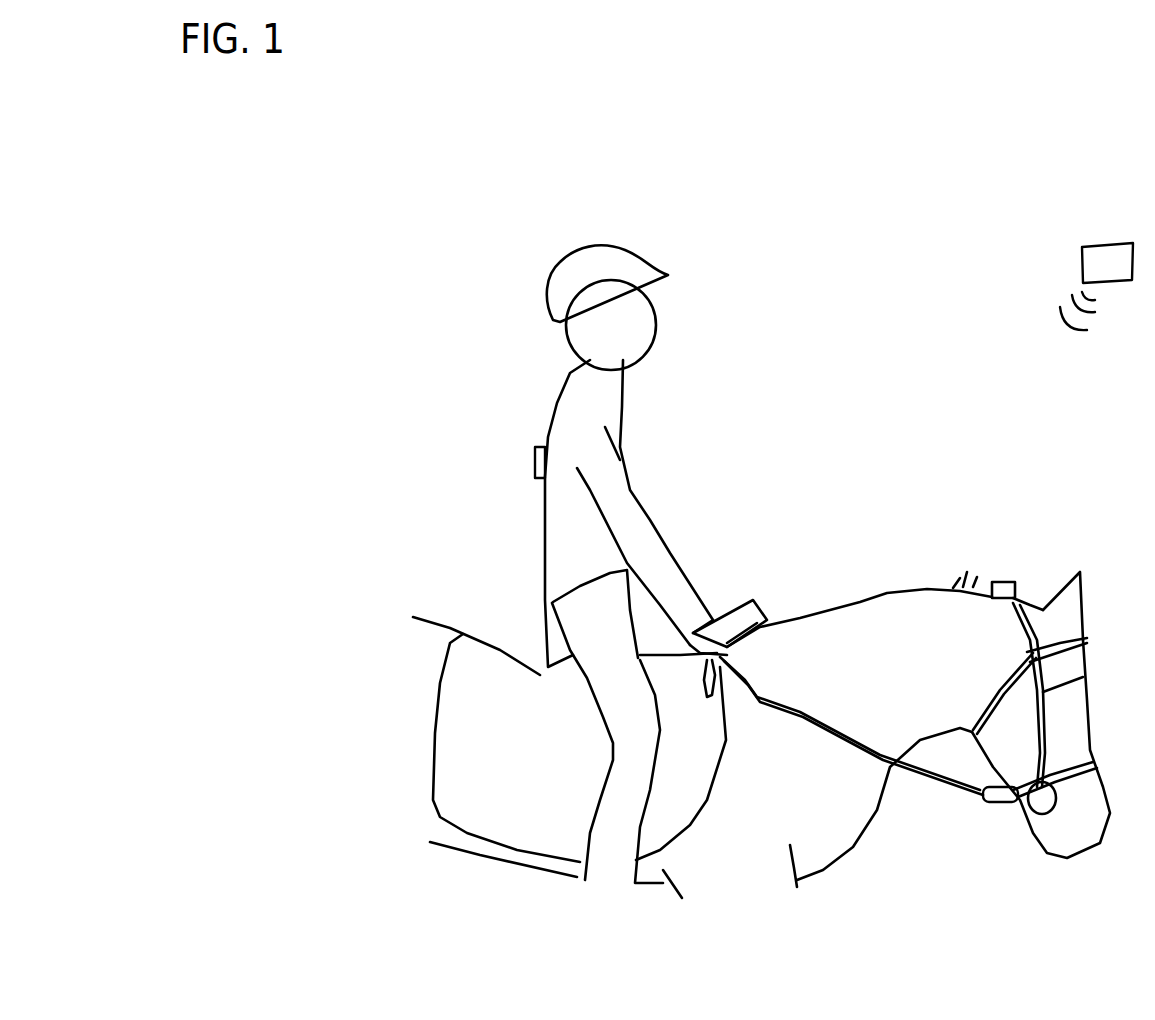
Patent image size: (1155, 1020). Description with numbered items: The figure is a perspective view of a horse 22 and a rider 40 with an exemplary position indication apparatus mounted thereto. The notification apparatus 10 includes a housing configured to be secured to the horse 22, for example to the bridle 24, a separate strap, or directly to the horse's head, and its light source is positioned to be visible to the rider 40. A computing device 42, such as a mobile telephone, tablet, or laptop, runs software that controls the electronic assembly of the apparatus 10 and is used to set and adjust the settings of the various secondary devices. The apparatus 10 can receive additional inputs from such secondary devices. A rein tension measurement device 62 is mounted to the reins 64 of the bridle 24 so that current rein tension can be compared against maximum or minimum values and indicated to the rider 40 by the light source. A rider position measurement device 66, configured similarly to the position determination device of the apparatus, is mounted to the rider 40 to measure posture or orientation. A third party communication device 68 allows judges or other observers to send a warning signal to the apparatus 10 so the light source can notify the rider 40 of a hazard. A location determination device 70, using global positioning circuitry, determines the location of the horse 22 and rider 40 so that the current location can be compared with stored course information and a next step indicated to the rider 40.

The notification apparatus 10 is at (941, 637).
The horse 22 is at (887, 593).
The bridle 24 is at (1083, 677).
The rider 40 is at (625, 392).
The computing device 42 is at (752, 600).
The rein tension measurement device 62 is at (998, 803).
The reins 64 is at (928, 785).
The rider position measurement device 66 is at (535, 453).
The third party communication device 68 is at (1120, 243).
The location determination device 70 is at (1010, 580).